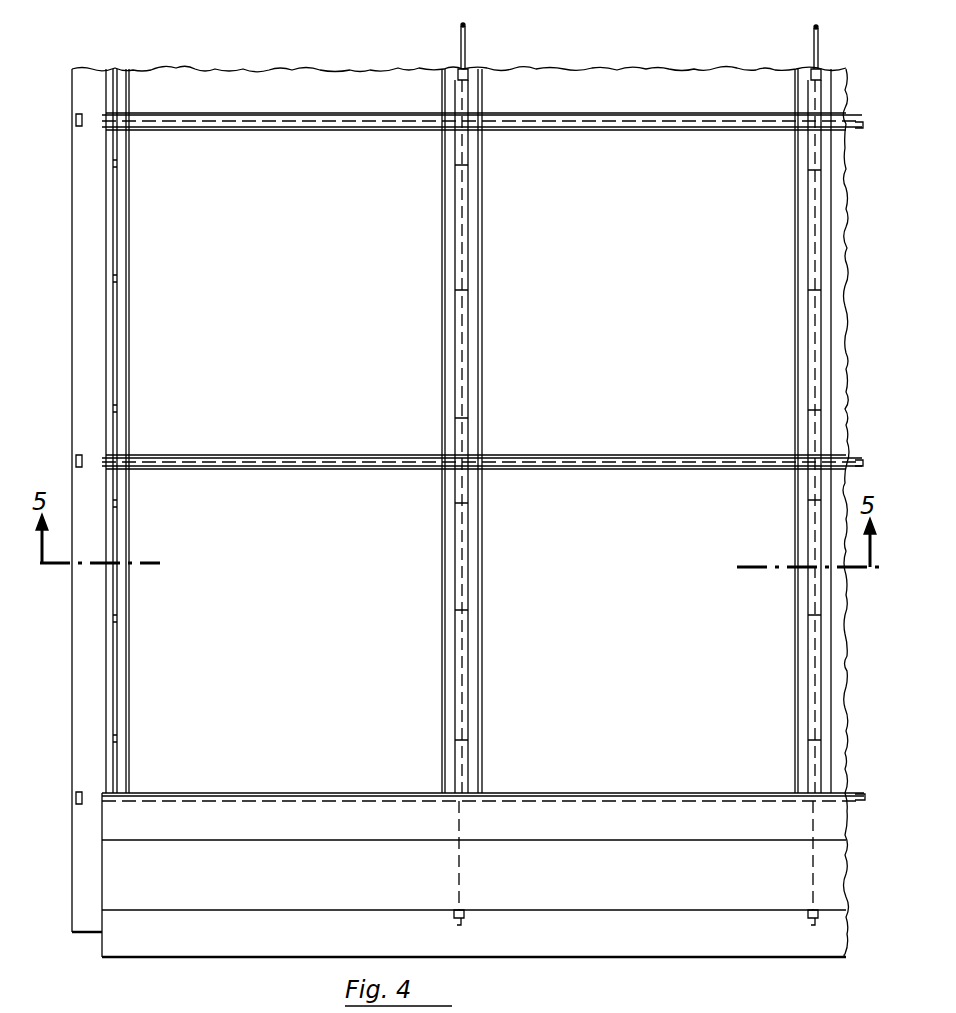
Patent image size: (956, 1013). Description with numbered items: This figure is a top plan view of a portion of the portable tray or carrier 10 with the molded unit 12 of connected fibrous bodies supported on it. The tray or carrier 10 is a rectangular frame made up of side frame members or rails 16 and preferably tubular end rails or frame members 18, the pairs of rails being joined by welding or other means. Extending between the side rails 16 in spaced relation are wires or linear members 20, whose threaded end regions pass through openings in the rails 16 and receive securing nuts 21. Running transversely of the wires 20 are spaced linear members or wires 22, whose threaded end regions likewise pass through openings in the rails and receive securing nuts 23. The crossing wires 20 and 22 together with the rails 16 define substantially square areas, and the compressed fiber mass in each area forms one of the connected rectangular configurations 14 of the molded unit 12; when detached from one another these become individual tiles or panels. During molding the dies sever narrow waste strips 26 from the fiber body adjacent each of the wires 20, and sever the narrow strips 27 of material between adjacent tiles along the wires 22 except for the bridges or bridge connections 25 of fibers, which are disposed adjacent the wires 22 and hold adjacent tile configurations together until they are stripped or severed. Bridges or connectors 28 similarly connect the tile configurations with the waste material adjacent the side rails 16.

The portable tray or carrier 10 is at (65, 68).
The molded unit 12 is at (688, 64).
The connected rectangular configurations 14 is at (304, 98).
The side frame members or rails 16 is at (74, 209).
The end rails or frame members 18 is at (222, 897).
The wires or linear members 20 is at (860, 124).
The nuts 21 is at (106, 120).
The linear members or wires 22 is at (468, 48).
The securing nuts 23 is at (455, 913).
The bridges or bridge connections 25 is at (470, 170).
The narrow strips 26 is at (322, 130).
The narrow strips 27 is at (470, 222).
The bridges or bridge connections or connectors 28 is at (118, 164).